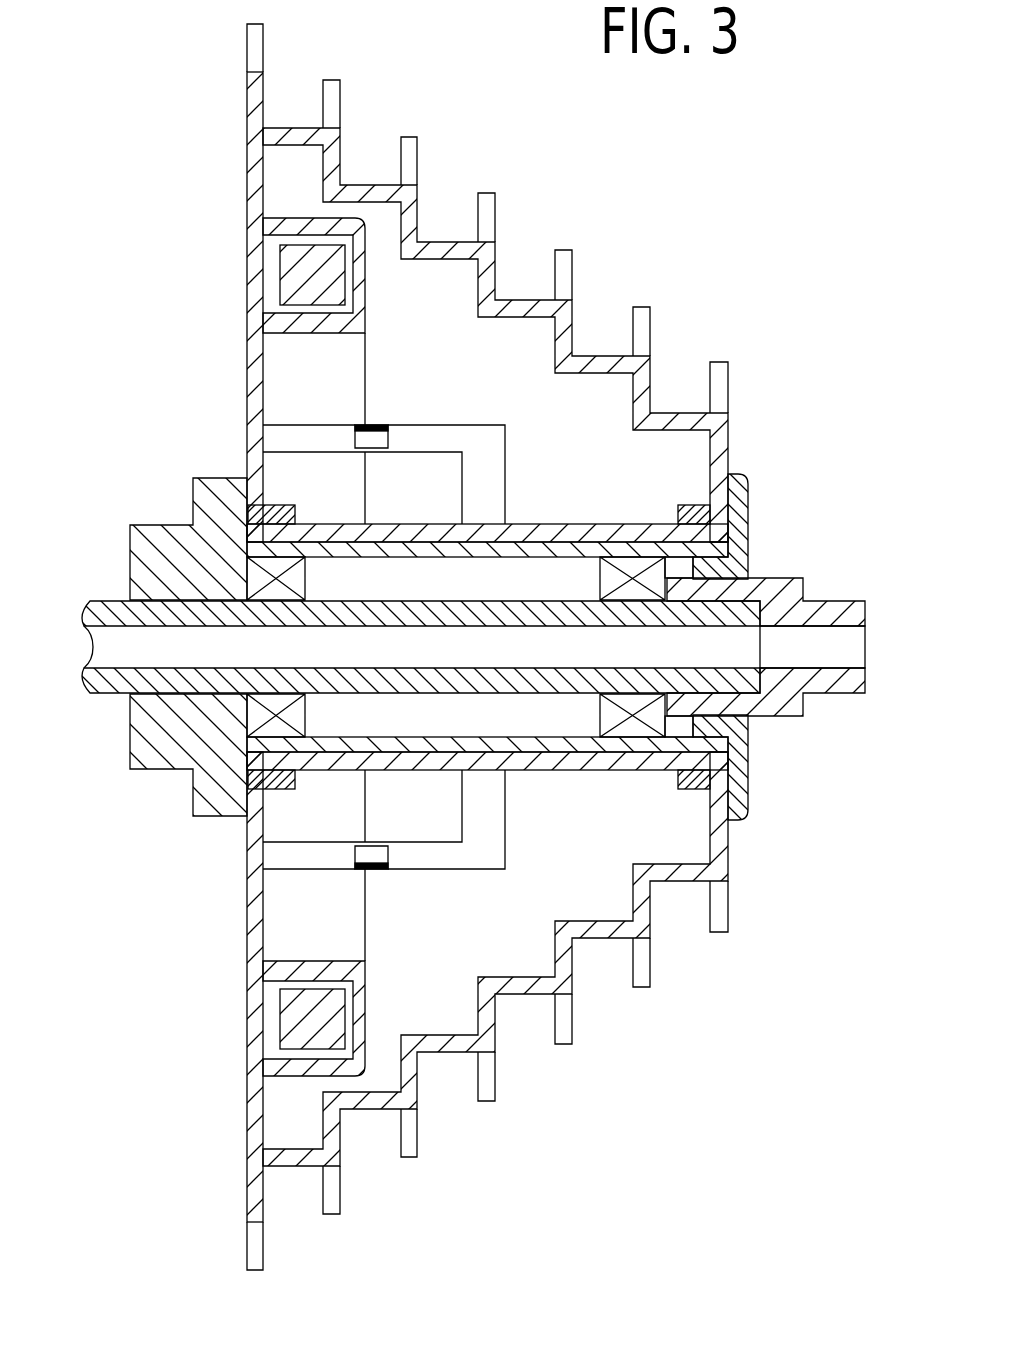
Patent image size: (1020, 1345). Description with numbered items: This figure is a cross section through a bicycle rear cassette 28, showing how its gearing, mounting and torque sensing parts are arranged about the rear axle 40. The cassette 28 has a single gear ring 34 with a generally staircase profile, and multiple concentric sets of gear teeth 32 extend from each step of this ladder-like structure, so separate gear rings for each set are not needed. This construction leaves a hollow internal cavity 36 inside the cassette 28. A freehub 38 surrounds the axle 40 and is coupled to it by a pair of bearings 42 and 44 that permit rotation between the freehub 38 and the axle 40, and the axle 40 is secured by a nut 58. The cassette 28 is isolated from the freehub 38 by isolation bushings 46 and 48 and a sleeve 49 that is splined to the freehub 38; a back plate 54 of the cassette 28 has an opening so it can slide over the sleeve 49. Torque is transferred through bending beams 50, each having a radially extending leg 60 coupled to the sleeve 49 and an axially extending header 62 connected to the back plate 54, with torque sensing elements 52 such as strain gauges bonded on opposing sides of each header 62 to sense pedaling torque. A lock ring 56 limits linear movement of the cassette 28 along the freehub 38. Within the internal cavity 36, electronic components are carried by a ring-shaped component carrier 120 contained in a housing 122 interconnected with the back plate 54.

The cassette 28 is at (842, 291).
The gear teeth 32 is at (258, 42).
The single gear ring 34 is at (356, 174).
The internal cavity 36 is at (583, 422).
The freehub 38 is at (150, 530).
The rear axle 40 is at (105, 652).
The bearing 42 is at (308, 582).
The bearing 44 is at (600, 586).
The isolation bushing 46 is at (280, 506).
The isolation bushing 48 is at (693, 502).
The sleeve 49 is at (596, 530).
The bending beam 50 is at (400, 413).
The torque sensing element 52 is at (380, 447).
The back plate 54 is at (262, 216).
The lock ring 56 is at (738, 541).
The nut 58 is at (866, 690).
The radially extending leg 60 is at (492, 466).
The axially extending header 62 is at (303, 432).
The component carrier 120 is at (290, 287).
The housing 122 is at (285, 218).